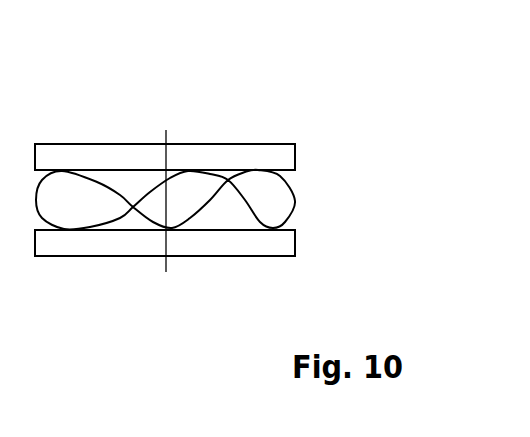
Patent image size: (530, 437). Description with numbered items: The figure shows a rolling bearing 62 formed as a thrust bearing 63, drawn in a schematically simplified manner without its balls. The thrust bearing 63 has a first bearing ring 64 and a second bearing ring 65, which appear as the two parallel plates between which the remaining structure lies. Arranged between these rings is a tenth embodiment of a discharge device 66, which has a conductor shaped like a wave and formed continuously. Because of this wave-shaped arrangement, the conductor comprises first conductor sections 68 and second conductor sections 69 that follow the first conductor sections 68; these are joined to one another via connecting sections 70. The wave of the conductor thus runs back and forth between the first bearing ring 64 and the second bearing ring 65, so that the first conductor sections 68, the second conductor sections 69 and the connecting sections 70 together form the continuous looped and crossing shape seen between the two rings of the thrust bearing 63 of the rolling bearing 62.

The rolling bearing 62 is at (166, 178).
The thrust bearing 63 is at (213, 136).
The first bearing ring 64 is at (283, 158).
The second bearing ring 65 is at (282, 245).
The discharge device 66 is at (166, 126).
The first conductor sections 68 is at (188, 172).
The second conductor sections 69 is at (170, 226).
The connecting sections 70 is at (205, 212).